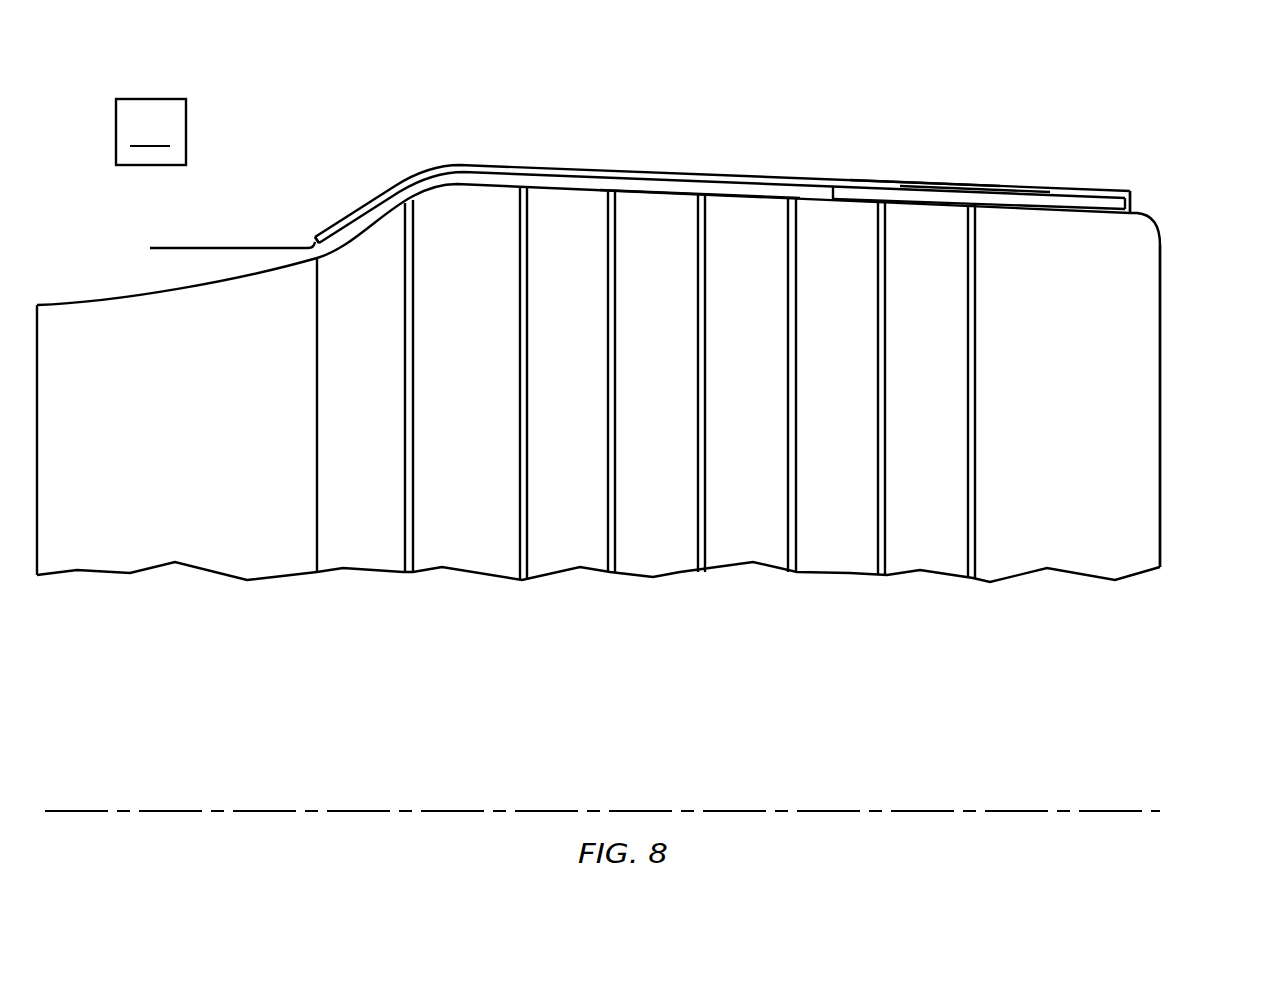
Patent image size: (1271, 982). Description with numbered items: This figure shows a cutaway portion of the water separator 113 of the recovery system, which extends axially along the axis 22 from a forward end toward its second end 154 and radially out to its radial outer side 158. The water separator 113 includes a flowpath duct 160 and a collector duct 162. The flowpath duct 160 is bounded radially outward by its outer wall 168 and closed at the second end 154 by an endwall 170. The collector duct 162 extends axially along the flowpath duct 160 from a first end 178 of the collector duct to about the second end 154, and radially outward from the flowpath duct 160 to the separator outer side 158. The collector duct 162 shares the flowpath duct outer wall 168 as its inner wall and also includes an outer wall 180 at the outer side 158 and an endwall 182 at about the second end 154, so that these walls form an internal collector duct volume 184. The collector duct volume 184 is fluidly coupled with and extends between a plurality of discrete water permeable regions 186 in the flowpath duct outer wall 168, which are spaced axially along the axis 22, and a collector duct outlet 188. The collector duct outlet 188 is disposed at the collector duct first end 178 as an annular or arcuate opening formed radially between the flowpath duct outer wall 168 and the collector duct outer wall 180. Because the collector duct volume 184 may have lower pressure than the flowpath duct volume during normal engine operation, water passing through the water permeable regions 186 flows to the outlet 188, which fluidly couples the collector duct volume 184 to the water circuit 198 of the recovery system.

The axis 22 is at (66, 811).
The water separator 113 is at (1143, 158).
The second end 154 is at (1160, 341).
The radial outer side 158 is at (942, 181).
The flowpath duct 160 is at (95, 291).
The collector duct 162 is at (437, 158).
The outer wall 168 is at (833, 192).
The endwall 170 is at (1160, 341).
The first end 178 is at (316, 232).
The outer wall 180 is at (885, 181).
The endwall 182 is at (1132, 205).
The collector duct volume 184 is at (698, 187).
The water permeable regions 186 is at (427, 545).
The collector duct outlet 188 is at (311, 244).
The water circuit 198 is at (150, 170).